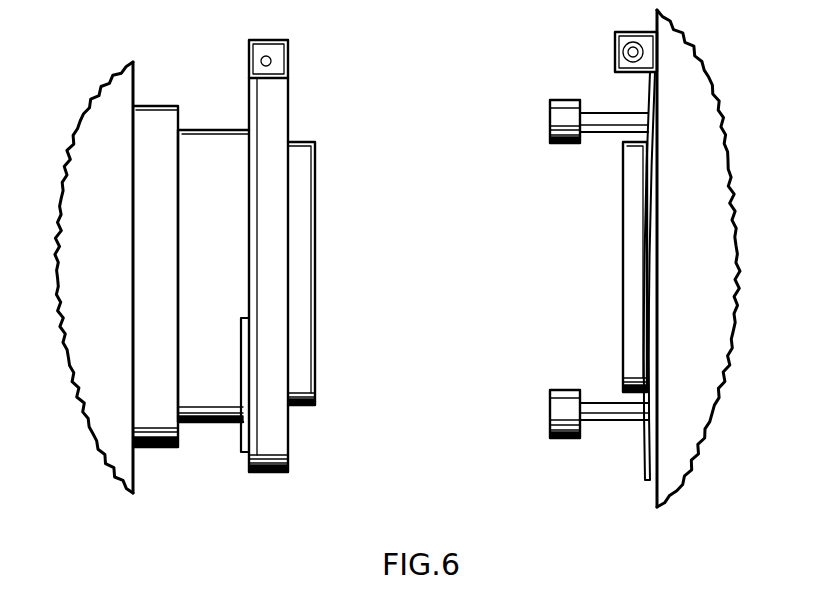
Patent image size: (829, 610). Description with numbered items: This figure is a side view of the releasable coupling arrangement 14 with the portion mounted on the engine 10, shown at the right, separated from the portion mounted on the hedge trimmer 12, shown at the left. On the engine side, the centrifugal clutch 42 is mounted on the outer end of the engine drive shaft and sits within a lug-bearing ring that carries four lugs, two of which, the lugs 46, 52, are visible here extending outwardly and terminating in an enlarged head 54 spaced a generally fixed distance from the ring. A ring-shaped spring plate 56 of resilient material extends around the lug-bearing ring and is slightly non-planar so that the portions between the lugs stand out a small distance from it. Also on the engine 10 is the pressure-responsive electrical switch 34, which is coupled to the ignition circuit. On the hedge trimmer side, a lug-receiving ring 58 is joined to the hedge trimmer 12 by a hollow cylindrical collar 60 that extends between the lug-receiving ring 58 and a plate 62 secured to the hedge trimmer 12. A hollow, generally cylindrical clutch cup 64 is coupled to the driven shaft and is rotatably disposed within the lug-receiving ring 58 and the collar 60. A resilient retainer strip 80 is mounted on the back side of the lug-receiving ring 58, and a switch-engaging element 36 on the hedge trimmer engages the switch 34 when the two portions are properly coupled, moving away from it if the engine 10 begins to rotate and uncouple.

The engine 10 is at (685, 50).
The hedge trimmer 12 is at (133, 92).
The releasable coupling arrangement 14 is at (492, 417).
The pressure-responsive electrical switch 34 is at (614, 48).
The switch-engaging element 36 is at (276, 62).
The centrifugal clutch 42 is at (623, 226).
The lug 46 is at (608, 408).
The lug 52 is at (624, 104).
The enlarged head 54 is at (550, 116).
The spring plate 56 is at (640, 290).
The lug-receiving ring 58 is at (278, 112).
The hollow cylindrical collar 60 is at (204, 396).
The plate 62 is at (158, 438).
The clutch cup 64 is at (302, 231).
The resilient retainer strip 80 is at (242, 442).